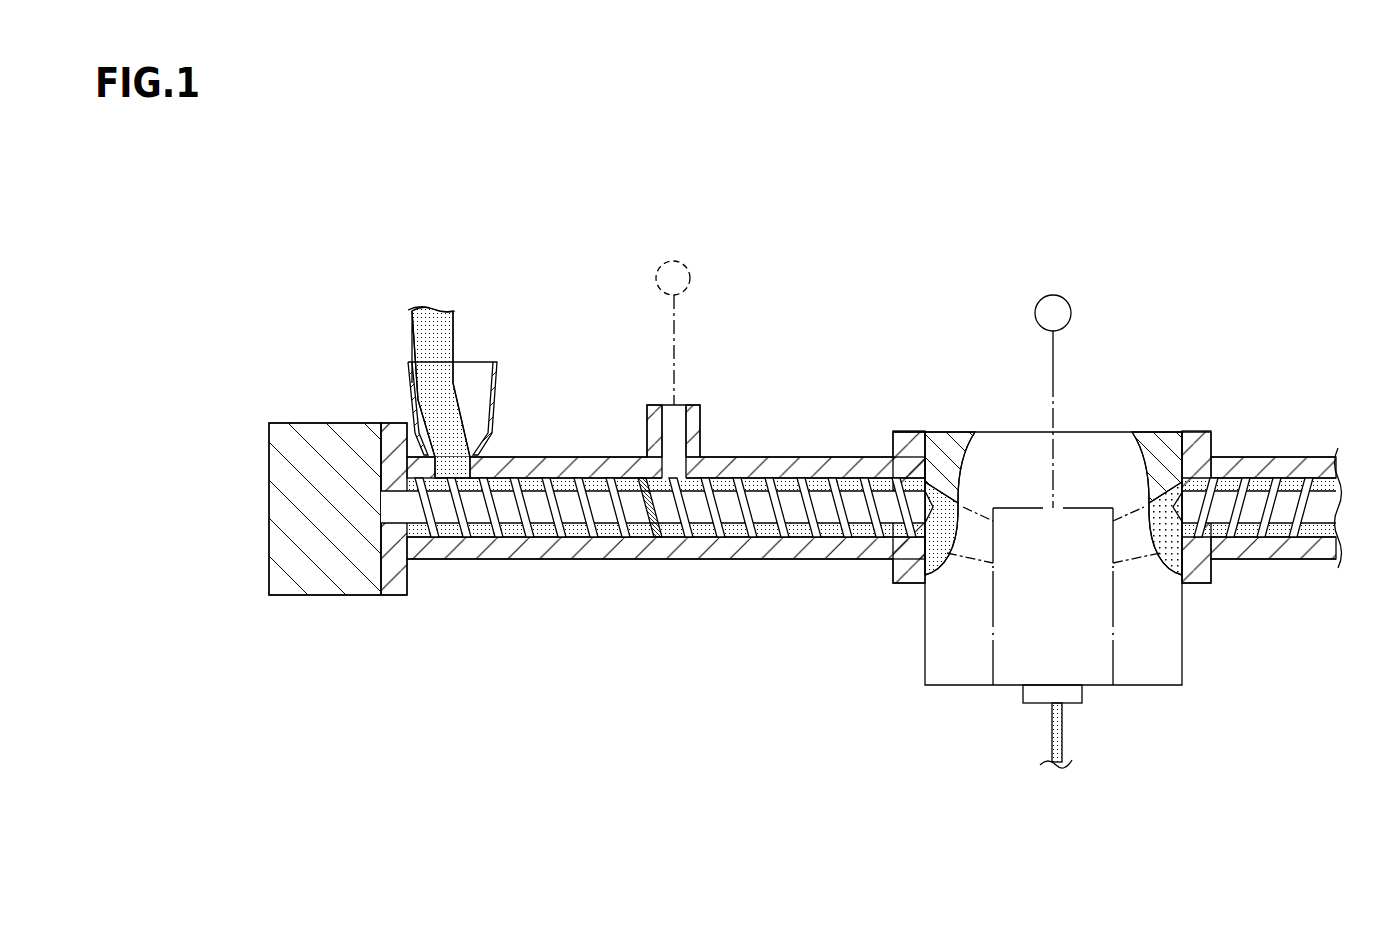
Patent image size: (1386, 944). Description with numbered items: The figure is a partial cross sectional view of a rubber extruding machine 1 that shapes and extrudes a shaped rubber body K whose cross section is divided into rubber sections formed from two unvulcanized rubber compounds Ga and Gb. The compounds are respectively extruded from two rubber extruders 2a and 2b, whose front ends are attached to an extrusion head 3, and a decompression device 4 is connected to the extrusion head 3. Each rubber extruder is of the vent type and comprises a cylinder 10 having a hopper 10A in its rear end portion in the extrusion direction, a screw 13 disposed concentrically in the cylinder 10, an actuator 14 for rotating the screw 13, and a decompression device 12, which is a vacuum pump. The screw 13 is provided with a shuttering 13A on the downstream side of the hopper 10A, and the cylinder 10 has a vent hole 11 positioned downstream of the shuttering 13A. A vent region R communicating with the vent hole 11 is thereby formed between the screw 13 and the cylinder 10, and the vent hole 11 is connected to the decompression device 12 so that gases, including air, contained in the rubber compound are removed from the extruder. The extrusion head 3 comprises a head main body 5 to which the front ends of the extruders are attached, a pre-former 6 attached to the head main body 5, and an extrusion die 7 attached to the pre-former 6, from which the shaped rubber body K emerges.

The rubber extruding machine 1 is at (881, 236).
The rubber extruder 2a is at (666, 375).
The rubber extruder 2b is at (1253, 457).
The extrusion head 3 is at (1086, 521).
The decompression device 4 is at (1060, 297).
The head main body 5 is at (1013, 432).
The pre-former 6 is at (1113, 662).
The extrusion die 7 is at (1022, 693).
The shaped rubber body K is at (1052, 735).
The cylinder 10 is at (657, 567).
The hopper 10A is at (482, 348).
The vent hole 11 is at (668, 435).
The decompression device 12 is at (685, 262).
The screw 13 is at (757, 508).
The shuttering 13A is at (640, 520).
The actuator 14 is at (323, 595).
The vent region R is at (688, 468).
The unvulcanized rubber compound Ga is at (943, 527).
The unvulcanized rubber compound Gb is at (1165, 535).